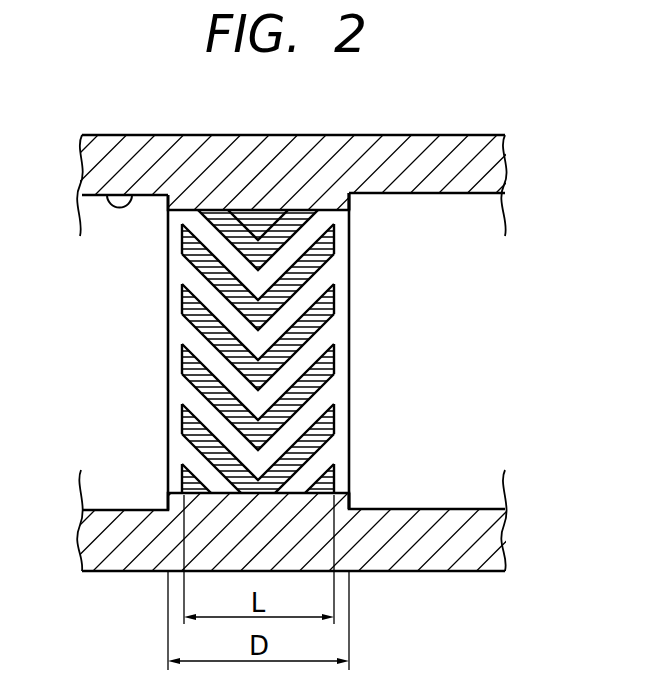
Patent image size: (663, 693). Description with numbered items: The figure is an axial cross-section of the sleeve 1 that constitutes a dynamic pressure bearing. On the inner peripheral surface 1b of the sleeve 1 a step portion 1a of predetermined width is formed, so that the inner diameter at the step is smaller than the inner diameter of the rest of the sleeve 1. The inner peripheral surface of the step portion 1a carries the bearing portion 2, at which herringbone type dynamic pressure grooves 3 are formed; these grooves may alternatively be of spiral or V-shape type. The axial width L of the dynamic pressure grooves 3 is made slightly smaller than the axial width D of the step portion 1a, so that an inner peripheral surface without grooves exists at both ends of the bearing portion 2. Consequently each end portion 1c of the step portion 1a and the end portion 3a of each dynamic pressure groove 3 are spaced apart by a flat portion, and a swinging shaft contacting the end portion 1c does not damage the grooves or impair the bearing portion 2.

The sleeve 1 is at (312, 162).
The step portion 1a is at (348, 202).
The inner peripheral surface 1b is at (130, 192).
The end portion of the step portion 1c is at (168, 262).
The bearing portion 2 is at (250, 226).
The dynamic pressure grooves 3 is at (334, 308).
The end portion of the dynamic pressure groove 3a is at (182, 302).